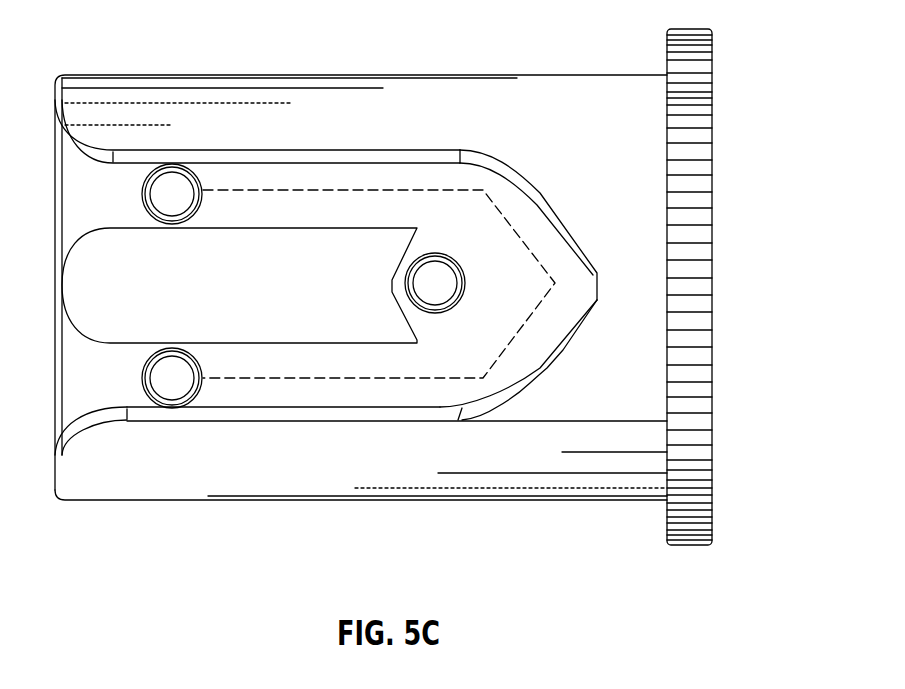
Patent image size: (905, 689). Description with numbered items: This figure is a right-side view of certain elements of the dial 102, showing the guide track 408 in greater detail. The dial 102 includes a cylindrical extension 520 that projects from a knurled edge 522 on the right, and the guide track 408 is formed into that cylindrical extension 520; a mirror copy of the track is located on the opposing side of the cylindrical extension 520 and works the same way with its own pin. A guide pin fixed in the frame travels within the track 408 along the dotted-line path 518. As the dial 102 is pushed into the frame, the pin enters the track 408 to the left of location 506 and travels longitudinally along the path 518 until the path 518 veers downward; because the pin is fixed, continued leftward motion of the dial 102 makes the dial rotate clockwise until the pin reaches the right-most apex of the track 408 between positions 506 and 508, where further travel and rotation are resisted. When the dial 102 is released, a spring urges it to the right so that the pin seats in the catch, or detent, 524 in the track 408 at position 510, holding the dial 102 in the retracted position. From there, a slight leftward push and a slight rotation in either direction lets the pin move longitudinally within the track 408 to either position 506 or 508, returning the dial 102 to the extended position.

The dial 102 is at (713, 410).
The guide track 408 is at (523, 355).
The location 506 is at (172, 194).
The position 508 is at (172, 388).
The position 510 is at (450, 258).
The path 518 is at (382, 190).
The cylindrical extension 520 is at (435, 488).
The knurled edge 522 is at (687, 547).
The catch 524 is at (392, 292).